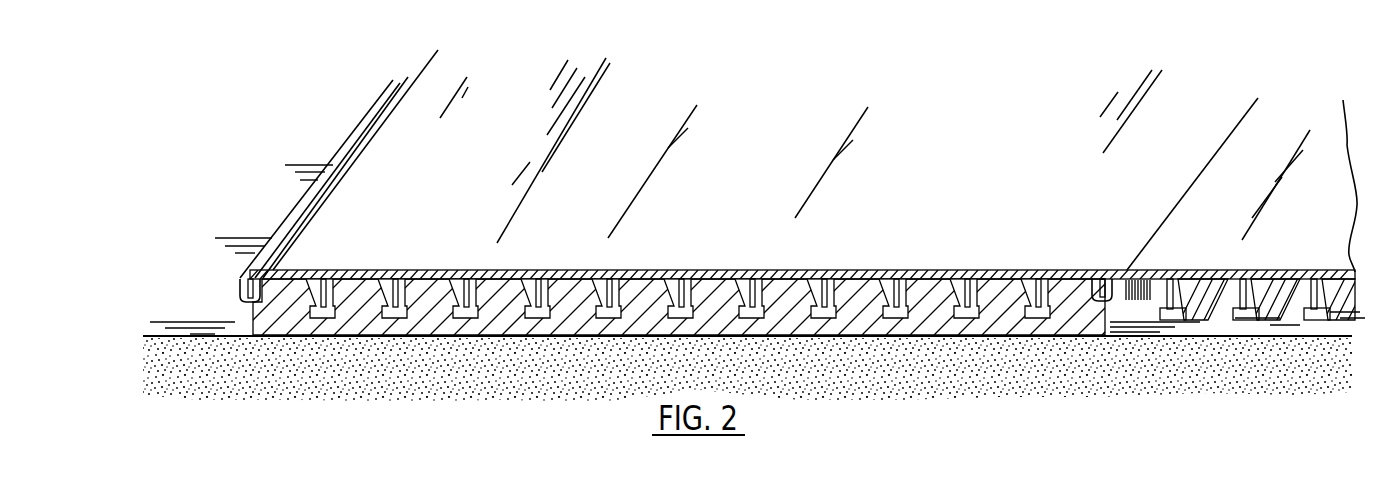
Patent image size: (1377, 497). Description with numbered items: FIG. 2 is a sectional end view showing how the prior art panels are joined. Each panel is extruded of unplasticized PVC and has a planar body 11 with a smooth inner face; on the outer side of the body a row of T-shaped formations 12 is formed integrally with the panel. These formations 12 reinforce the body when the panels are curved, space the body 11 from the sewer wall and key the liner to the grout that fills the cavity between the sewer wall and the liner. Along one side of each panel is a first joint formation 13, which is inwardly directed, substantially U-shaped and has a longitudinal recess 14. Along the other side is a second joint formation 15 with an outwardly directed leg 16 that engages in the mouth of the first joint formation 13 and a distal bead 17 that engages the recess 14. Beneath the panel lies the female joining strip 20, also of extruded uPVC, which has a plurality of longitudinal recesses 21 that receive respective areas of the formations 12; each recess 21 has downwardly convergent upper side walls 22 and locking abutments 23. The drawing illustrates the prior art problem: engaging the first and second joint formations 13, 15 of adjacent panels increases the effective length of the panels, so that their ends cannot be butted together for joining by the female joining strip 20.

The planar body 11 is at (933, 272).
The T-shaped formations 12 is at (906, 322).
The first joint formation 13 is at (240, 298).
The longitudinal recess 14 is at (242, 299).
The second joint formation 15 is at (1108, 323).
The outwardly directed leg 16 is at (1145, 275).
The distal bead 17 is at (1080, 277).
The female joining strip 20 is at (840, 338).
The longitudinal recesses 21 is at (1031, 321).
The downwardly convergent upper side walls 22 is at (338, 302).
The locking abutments 23 is at (297, 304).